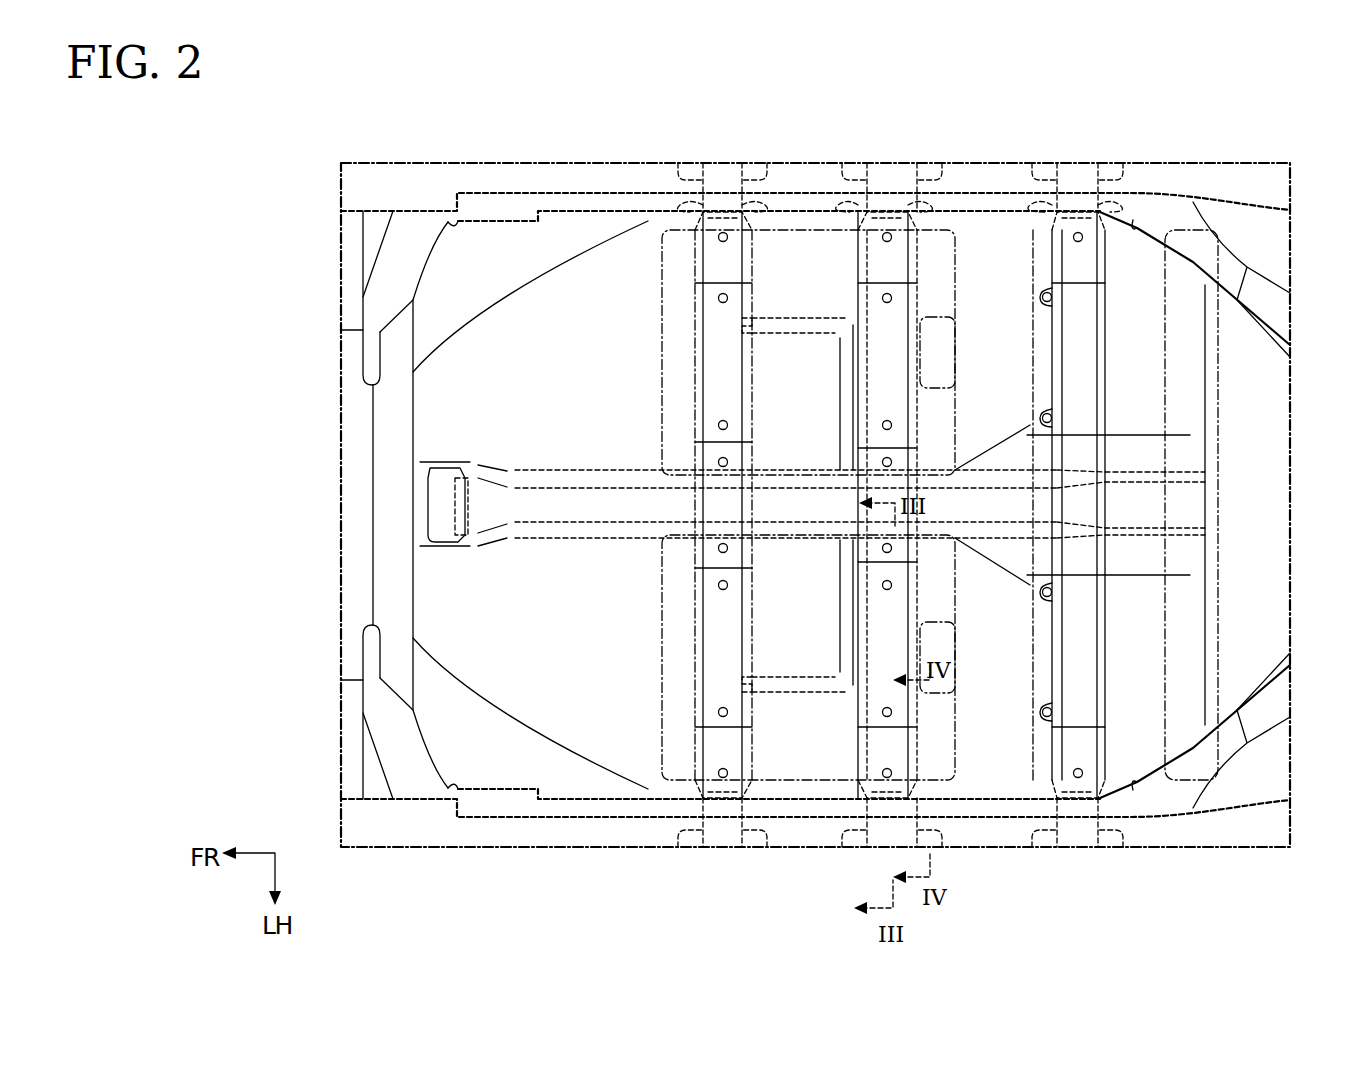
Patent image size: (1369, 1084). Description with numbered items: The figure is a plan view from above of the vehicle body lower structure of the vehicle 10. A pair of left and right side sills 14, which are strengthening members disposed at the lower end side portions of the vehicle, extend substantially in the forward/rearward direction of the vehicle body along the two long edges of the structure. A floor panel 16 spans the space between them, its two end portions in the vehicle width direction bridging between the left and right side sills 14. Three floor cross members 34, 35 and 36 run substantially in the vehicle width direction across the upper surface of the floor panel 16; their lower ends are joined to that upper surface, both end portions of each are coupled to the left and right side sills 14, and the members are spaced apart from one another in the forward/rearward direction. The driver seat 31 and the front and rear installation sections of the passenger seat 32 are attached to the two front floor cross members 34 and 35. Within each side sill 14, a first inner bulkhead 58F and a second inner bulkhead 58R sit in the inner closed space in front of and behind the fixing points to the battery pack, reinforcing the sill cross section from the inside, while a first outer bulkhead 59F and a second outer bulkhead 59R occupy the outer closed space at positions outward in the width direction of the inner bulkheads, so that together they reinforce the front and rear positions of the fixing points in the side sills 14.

The vehicle 10 is at (573, 163).
The side sill 14 is at (992, 163).
The floor panel 16 is at (462, 408).
The driver seat 31 is at (657, 353).
The passenger seat 32 is at (657, 590).
The floor cross member 34 is at (697, 640).
The floor cross member 35 is at (859, 619).
The floor cross member 36 is at (1097, 607).
The first inner bulkhead 58F is at (692, 212).
The second inner bulkhead 58R is at (750, 215).
The first outer bulkhead 59F is at (680, 165).
The second outer bulkhead 59R is at (767, 165).